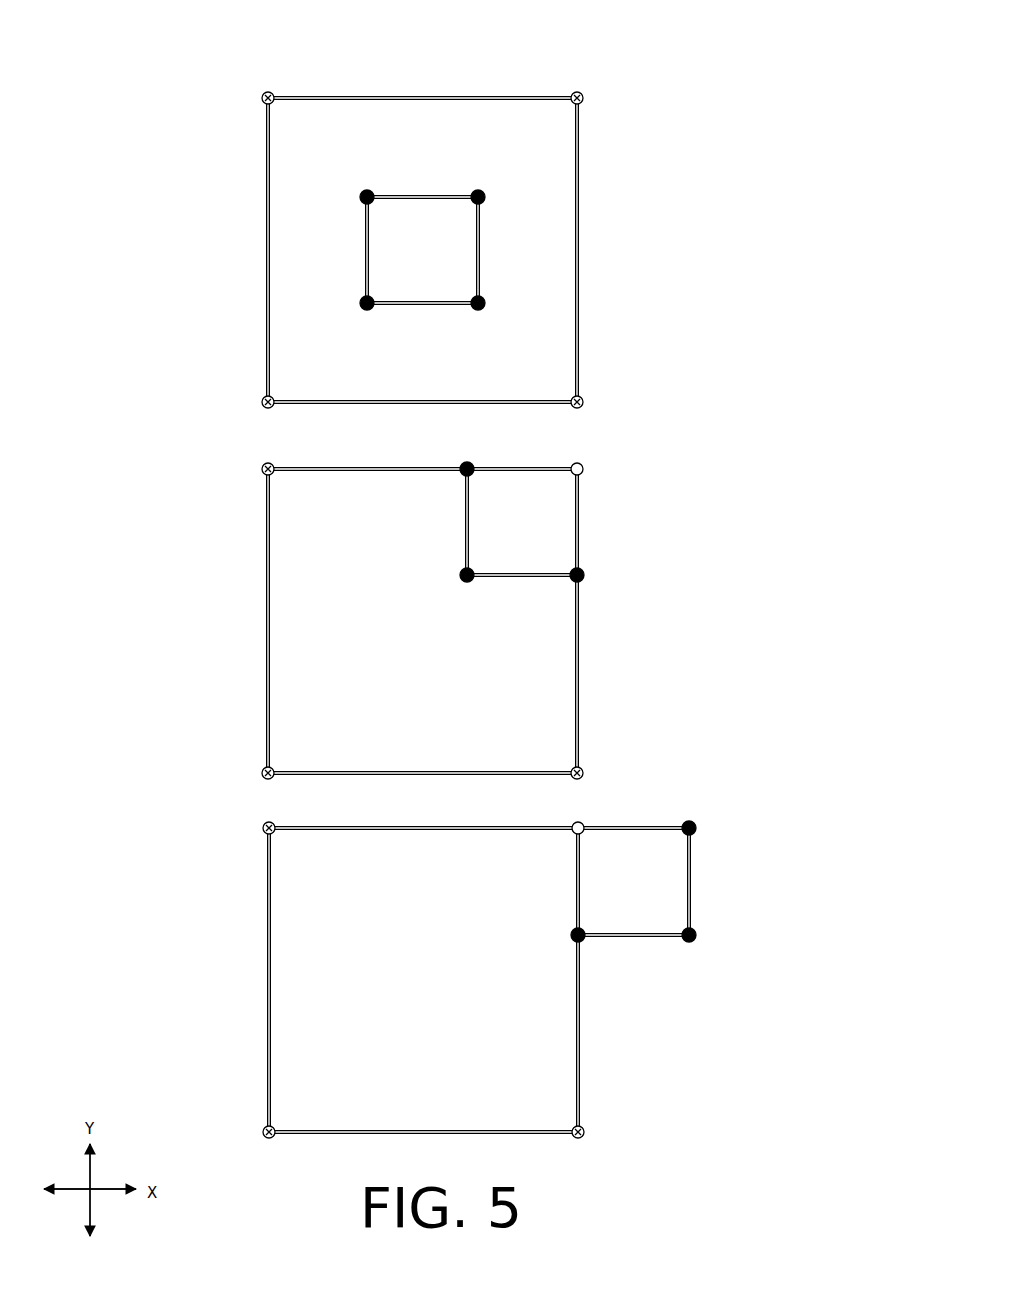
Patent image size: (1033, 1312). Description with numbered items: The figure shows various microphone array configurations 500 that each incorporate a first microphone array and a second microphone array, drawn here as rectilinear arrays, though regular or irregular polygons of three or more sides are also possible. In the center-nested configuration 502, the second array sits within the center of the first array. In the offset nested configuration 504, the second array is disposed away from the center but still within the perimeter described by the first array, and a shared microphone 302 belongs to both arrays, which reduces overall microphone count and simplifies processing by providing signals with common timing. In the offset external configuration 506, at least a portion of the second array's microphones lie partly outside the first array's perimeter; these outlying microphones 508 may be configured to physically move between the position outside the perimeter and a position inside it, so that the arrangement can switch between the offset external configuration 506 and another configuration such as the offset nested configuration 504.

The microphone array configurations 500 is at (733, 27).
The center-nested configuration 502 is at (235, 62).
The offset nested configuration 504 is at (223, 463).
The offset external configuration 506 is at (230, 822).
The shared microphone 302 is at (582, 824).
The outlying microphones 508 is at (691, 834).